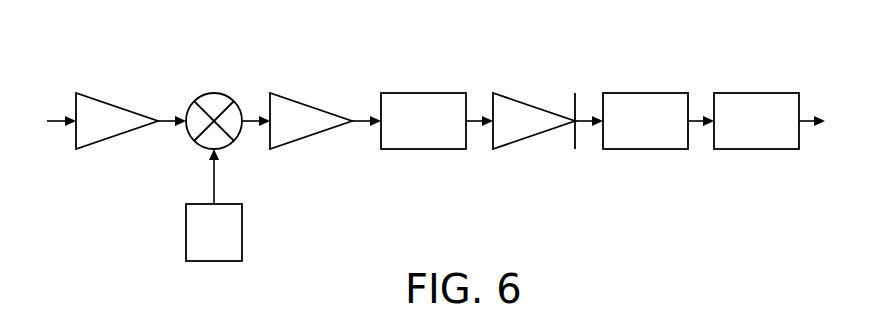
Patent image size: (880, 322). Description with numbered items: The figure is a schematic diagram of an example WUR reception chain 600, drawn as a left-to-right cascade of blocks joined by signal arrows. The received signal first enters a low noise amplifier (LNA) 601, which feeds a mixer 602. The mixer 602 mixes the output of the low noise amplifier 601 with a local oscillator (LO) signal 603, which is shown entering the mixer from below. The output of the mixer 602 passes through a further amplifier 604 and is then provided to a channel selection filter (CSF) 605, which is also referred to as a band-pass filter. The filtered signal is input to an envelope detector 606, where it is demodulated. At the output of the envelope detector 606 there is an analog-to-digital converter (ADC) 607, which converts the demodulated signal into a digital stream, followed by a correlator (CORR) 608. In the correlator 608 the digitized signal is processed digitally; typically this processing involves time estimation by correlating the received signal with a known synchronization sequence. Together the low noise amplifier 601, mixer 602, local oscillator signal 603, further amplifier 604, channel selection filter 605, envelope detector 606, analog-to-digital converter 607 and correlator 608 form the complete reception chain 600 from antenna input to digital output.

The WUR reception chain 600 is at (66, 61).
The low noise amplifier 601 is at (103, 142).
The mixer 602 is at (227, 93).
The local oscillator signal 603 is at (214, 205).
The further amplifier 604 is at (298, 142).
The channel selection filter 605 is at (423, 121).
The envelope detector 606 is at (518, 140).
The analog-to-digital converter 607 is at (645, 121).
The correlator 608 is at (756, 121).